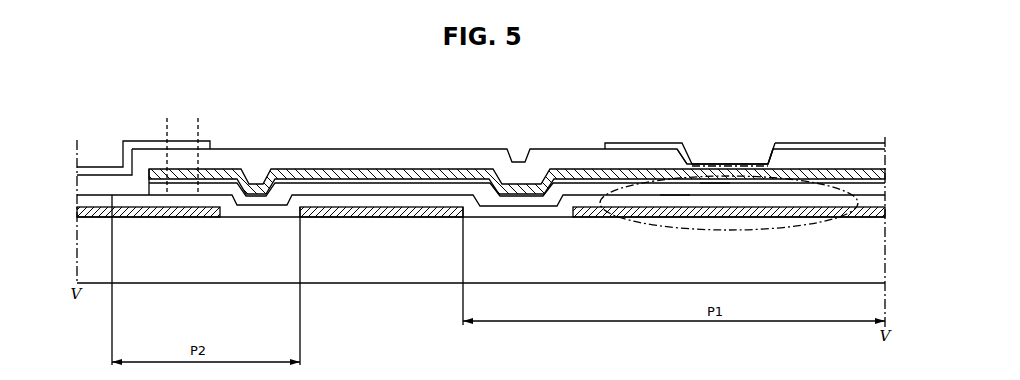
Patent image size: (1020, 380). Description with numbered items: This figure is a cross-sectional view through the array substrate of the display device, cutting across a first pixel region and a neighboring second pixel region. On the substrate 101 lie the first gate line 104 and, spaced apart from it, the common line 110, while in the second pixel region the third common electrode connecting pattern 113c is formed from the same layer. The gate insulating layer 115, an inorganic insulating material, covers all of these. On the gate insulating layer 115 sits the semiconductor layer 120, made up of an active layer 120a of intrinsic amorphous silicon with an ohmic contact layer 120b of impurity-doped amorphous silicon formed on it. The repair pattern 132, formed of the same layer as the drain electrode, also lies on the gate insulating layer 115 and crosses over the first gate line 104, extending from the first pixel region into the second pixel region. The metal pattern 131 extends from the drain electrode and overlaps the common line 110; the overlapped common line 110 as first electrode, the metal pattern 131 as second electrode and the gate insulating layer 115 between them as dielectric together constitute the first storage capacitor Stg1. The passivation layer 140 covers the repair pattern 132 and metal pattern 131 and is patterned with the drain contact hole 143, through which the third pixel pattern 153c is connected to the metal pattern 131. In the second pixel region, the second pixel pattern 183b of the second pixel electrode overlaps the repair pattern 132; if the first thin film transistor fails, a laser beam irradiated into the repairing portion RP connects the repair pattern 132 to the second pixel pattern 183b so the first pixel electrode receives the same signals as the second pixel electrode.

The substrate 101 is at (832, 261).
The first gate line 104 is at (415, 210).
The common line 110 is at (777, 218).
The third common electrode connecting pattern 113c is at (184, 217).
The gate insulating layer 115 is at (523, 212).
The semiconductor layer 120 is at (678, 250).
The active layer 120a is at (675, 192).
The ohmic contact layer 120b is at (710, 183).
The metal pattern 131 is at (632, 182).
The repair pattern 132 is at (322, 168).
The passivation layer 140 is at (415, 158).
The drain contact hole 143 is at (732, 150).
The third pixel pattern 153c is at (823, 143).
The second pixel pattern 183b is at (140, 140).
The repairing portion RP is at (182, 130).
The first storage capacitor Stg1 is at (688, 163).